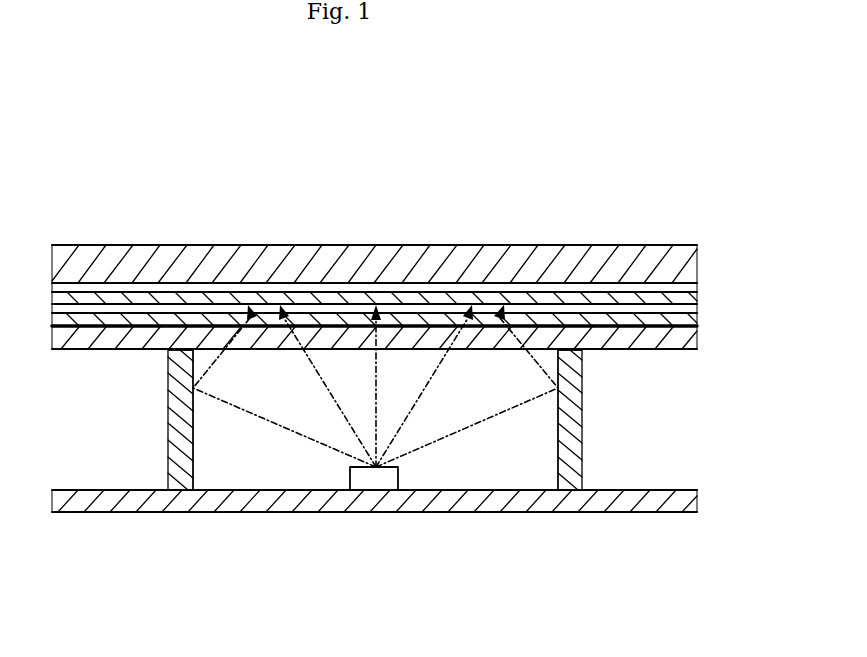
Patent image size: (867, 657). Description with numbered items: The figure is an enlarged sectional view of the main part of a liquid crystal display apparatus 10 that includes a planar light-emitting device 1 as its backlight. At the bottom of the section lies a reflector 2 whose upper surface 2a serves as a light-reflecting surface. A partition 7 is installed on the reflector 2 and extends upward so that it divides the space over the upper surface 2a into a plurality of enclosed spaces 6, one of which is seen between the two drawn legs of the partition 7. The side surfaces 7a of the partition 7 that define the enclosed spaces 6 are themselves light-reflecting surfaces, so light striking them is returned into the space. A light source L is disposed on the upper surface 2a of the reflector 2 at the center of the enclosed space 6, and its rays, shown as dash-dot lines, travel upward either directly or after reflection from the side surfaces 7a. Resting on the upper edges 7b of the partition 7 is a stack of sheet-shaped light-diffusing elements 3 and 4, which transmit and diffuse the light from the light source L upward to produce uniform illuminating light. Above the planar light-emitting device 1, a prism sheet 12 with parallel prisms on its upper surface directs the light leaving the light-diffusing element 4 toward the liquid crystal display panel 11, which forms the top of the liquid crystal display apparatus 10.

The planar light-emitting device 1 is at (392, 517).
The reflector 2 is at (100, 512).
The upper surface 2a is at (678, 490).
The sheet-shaped light-diffusing element 3 is at (118, 326).
The sheet-shaped light-diffusing element 4 is at (157, 304).
The enclosed space 6 is at (335, 356).
The partition 7 is at (158, 448).
The side surface 7a is at (268, 462).
The upper edge 7b is at (577, 350).
The liquid crystal display apparatus 10 is at (562, 203).
The liquid crystal display panel 11 is at (470, 245).
The prism sheet 12 is at (222, 298).
The light source L is at (350, 478).